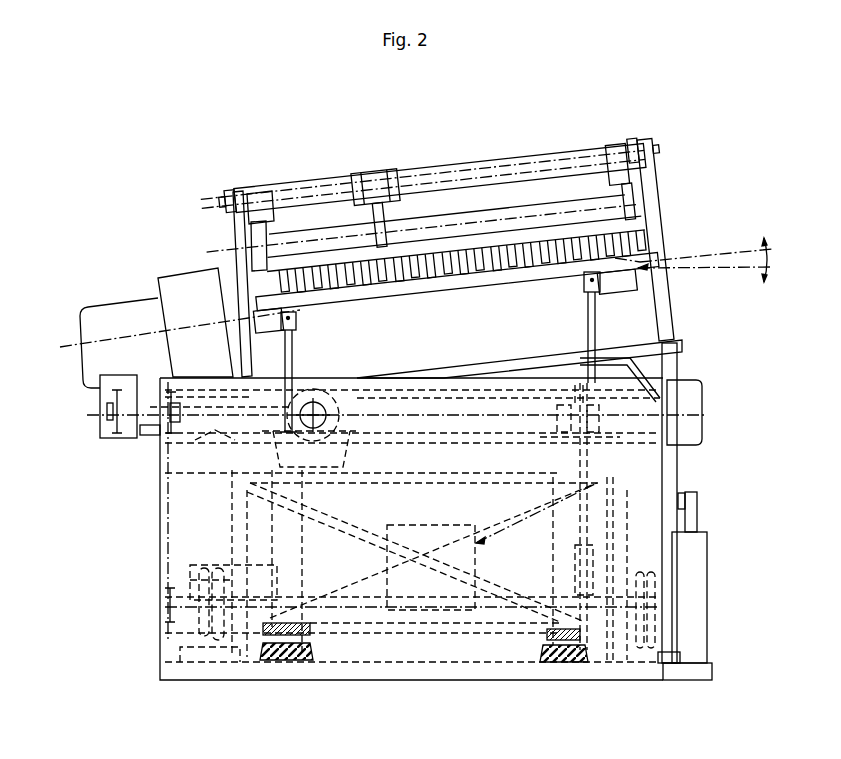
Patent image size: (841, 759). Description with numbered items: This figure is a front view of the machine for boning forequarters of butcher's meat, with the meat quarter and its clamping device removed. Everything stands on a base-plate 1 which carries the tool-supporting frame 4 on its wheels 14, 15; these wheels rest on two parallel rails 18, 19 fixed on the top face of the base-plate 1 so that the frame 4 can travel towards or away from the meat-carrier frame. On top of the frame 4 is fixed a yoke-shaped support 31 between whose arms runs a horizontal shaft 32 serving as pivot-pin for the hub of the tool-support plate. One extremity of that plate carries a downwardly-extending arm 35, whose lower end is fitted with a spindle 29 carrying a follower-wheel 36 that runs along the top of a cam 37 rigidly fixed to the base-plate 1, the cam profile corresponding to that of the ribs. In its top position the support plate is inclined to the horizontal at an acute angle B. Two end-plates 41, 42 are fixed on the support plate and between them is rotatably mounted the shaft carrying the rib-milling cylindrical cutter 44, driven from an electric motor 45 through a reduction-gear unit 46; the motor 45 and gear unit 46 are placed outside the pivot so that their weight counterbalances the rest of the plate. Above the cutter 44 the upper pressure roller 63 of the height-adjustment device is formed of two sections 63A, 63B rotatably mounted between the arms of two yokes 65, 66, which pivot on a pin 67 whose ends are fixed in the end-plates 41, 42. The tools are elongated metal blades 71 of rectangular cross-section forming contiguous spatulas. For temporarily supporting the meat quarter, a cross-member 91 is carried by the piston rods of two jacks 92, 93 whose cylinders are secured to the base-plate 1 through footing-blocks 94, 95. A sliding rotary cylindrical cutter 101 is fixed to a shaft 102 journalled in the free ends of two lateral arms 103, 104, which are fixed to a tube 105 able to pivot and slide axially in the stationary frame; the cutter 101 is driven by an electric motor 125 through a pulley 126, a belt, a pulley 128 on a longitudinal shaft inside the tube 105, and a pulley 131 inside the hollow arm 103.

The base-plate 1 is at (703, 675).
The tool-supporting frame 4 is at (230, 510).
The wheel 14 is at (205, 622).
The wheel 15 is at (745, 632).
The rail 18 is at (217, 652).
The rail 19 is at (643, 657).
The spindle 29 is at (682, 498).
The yoke-shaped support 31 is at (316, 453).
The horizontal shaft 32 is at (318, 418).
The downwardly-extending arm 35 is at (672, 467).
The follower-wheel 36 is at (691, 503).
The cam 37 is at (695, 570).
The end-plate 41 is at (242, 233).
The end-plate 42 is at (660, 287).
The rib-milling cylindrical cutter 44 is at (628, 285).
The electric motor 45 is at (98, 323).
The reduction-gear unit 46 is at (183, 308).
The upper pressure roller 63 is at (475, 203).
The roller section 63A is at (336, 252).
The roller section 63B is at (537, 207).
The yoke 65 is at (265, 223).
The yoke 66 is at (618, 178).
The pin 67 is at (652, 150).
The elongated metal blade 71 is at (632, 218).
The cross-member 91 is at (615, 258).
The jack 92 is at (150, 407).
The jack 93 is at (597, 315).
The footing-block 94 is at (292, 652).
The footing-block 95 is at (570, 658).
The sliding rotary cylindrical cutter 101 is at (172, 428).
The shaft 102 is at (132, 403).
The lateral arm 103 is at (108, 436).
The lateral arm 104 is at (690, 405).
The tube 105 is at (168, 440).
The electric motor 125 is at (193, 577).
The pulley 126 is at (167, 615).
The pulley 128 is at (150, 430).
The pulley 131 is at (128, 428).
The acute angle B is at (713, 260).